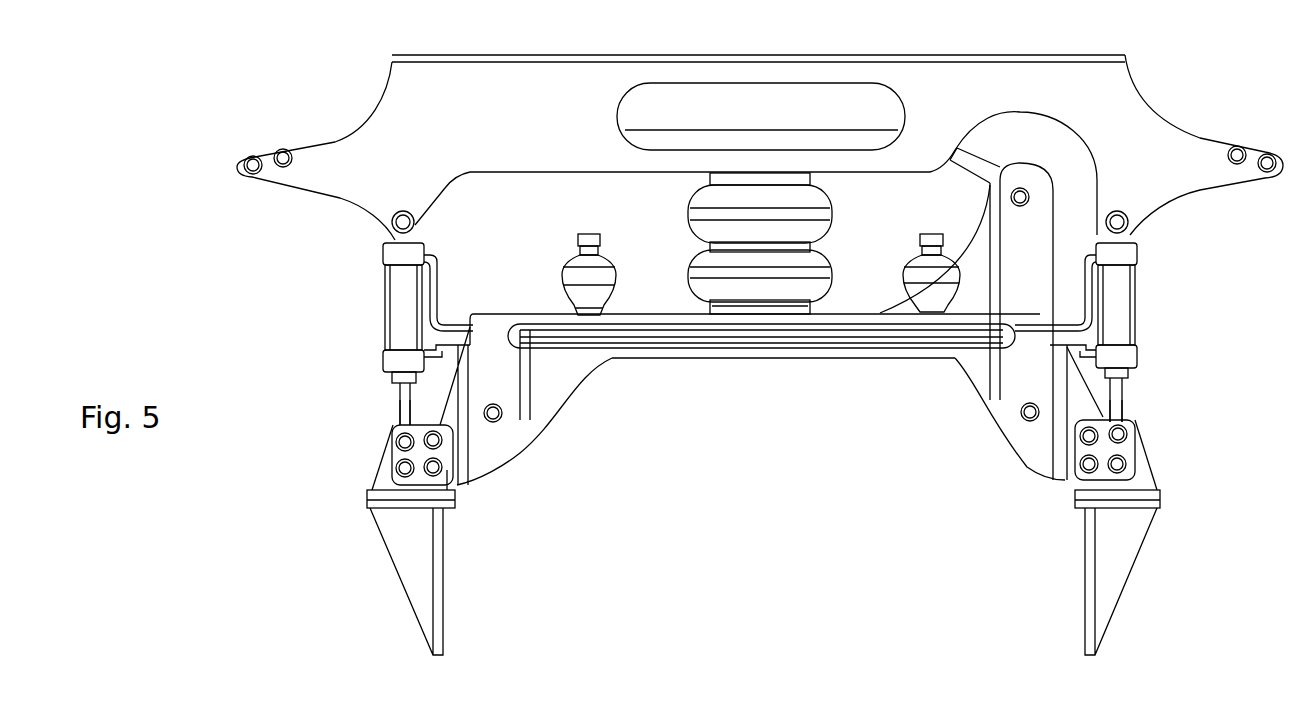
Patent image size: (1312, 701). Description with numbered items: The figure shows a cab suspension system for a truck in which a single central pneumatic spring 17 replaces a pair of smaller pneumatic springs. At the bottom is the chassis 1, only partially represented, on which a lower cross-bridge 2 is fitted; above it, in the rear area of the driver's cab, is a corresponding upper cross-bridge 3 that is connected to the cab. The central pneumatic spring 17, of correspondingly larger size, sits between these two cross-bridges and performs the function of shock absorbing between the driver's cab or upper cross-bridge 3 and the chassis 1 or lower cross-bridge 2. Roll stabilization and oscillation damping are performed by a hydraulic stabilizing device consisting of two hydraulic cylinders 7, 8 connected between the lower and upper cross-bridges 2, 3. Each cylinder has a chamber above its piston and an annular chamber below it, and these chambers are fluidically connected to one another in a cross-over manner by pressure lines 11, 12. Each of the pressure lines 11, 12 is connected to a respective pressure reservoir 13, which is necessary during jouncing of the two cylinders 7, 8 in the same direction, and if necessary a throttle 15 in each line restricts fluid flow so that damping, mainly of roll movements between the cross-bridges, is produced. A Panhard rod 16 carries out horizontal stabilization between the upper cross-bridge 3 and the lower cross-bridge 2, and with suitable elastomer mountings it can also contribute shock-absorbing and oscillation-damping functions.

The chassis 1 is at (410, 557).
The lower cross-bridge 2 is at (760, 331).
The upper cross-bridge 3 is at (337, 170).
The hydraulic cylinder 7 is at (405, 305).
The hydraulic cylinder 8 is at (1116, 307).
The pressure line 11 is at (452, 327).
The pressure line 12 is at (1069, 327).
The pressure reservoir 13 is at (928, 275).
The throttle 15 is at (405, 403).
The Panhard rod 16 is at (650, 138).
The central pneumatic spring 17 is at (755, 290).